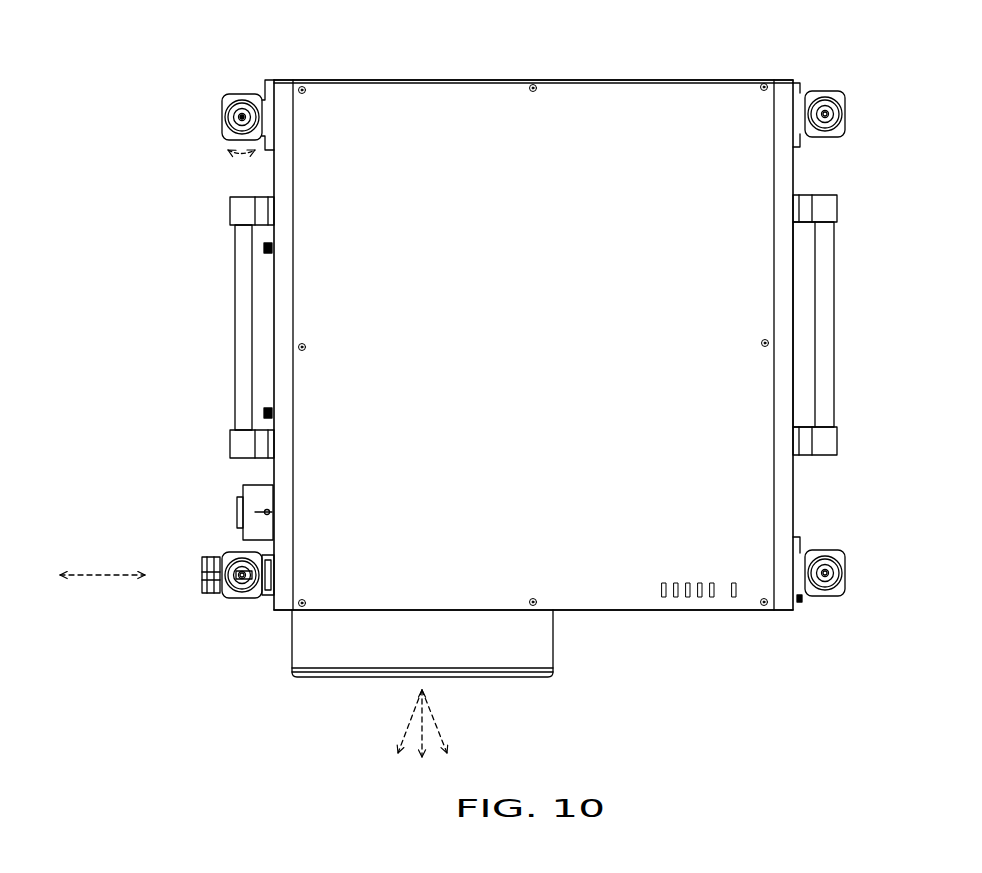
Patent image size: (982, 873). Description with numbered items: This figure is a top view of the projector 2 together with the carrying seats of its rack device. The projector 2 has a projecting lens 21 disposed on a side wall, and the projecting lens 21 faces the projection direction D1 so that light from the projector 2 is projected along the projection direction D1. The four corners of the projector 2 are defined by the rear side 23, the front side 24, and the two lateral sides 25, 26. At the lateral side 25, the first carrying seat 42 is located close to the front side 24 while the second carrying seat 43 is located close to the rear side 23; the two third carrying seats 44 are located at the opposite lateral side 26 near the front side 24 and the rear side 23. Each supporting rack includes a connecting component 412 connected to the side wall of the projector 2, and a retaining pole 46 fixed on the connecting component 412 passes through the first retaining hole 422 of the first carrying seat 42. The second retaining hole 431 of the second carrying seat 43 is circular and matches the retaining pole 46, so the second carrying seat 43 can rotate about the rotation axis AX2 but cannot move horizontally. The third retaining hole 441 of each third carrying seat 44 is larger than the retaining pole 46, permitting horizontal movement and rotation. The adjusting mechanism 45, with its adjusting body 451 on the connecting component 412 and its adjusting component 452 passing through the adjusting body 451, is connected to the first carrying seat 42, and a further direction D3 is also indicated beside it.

The projector 2 is at (647, 562).
The projecting lens 21 is at (548, 637).
The rear side 23 is at (688, 79).
The front side 24 is at (730, 610).
The lateral side 25 is at (272, 180).
The lateral side 26 is at (793, 173).
The connecting component 412 is at (272, 90).
The first carrying seat 42 is at (238, 608).
The first retaining hole 422 is at (247, 578).
The second carrying seat 43 is at (183, 132).
The second retaining hole 431 is at (233, 110).
The third carrying seat 44 is at (871, 419).
The third retaining hole 441 is at (840, 110).
The adjusting mechanism 45 is at (240, 623).
The adjusting body 451 is at (270, 585).
The adjusting component 452 is at (205, 562).
The retaining pole 46 is at (242, 110).
The rotation axis AX2 is at (237, 117).
The projection direction D1 is at (438, 723).
The third direction D3 is at (102, 560).